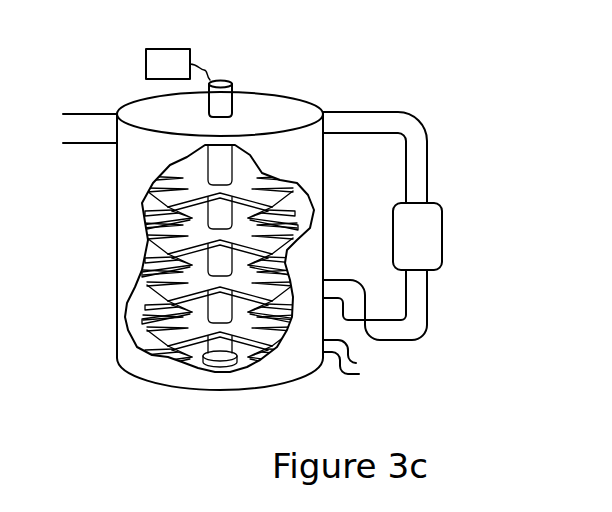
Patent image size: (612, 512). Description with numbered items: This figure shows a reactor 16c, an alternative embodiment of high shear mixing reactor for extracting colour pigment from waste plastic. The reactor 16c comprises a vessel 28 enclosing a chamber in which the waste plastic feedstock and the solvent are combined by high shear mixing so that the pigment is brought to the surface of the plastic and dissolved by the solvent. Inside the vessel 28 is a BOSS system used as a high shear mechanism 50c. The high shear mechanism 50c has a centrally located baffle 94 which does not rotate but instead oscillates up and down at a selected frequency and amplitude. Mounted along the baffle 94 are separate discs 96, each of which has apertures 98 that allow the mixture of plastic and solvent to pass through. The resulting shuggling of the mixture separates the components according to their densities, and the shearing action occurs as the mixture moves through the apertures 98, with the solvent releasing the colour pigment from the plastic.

The reactor 16c is at (343, 93).
The vessel 28 is at (138, 379).
The high shear mechanism 50c is at (301, 208).
The apertures 98 is at (157, 217).
The separate discs 96 is at (153, 240).
The centrally located baffle 94 is at (152, 296).